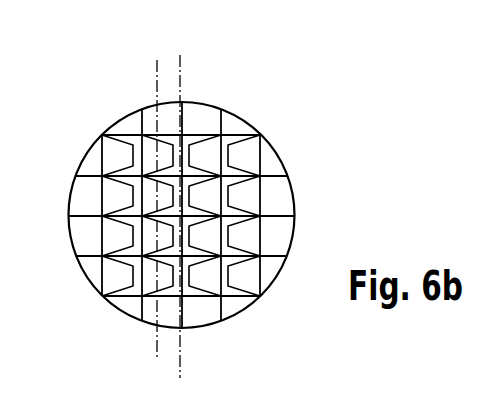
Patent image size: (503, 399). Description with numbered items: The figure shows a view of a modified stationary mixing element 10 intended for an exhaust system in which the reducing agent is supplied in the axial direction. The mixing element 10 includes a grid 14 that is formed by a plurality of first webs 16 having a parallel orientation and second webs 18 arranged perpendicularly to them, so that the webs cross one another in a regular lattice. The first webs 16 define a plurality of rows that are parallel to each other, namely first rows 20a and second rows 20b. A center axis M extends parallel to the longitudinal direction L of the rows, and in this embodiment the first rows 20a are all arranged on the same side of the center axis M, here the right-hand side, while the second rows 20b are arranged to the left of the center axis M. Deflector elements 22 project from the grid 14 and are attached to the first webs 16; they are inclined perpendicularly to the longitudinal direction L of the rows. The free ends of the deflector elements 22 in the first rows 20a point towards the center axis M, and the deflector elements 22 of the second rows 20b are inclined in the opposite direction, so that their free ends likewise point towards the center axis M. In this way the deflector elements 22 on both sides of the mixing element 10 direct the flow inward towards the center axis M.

The mixing element 10 is at (300, 112).
The grid 14 is at (275, 247).
The first webs 16 is at (261, 139).
The second webs 18 is at (271, 177).
The first rows 20a is at (206, 125).
The second rows 20b is at (150, 126).
The deflector elements 22 is at (158, 280).
The longitudinal direction L is at (157, 341).
The center axis M is at (182, 350).